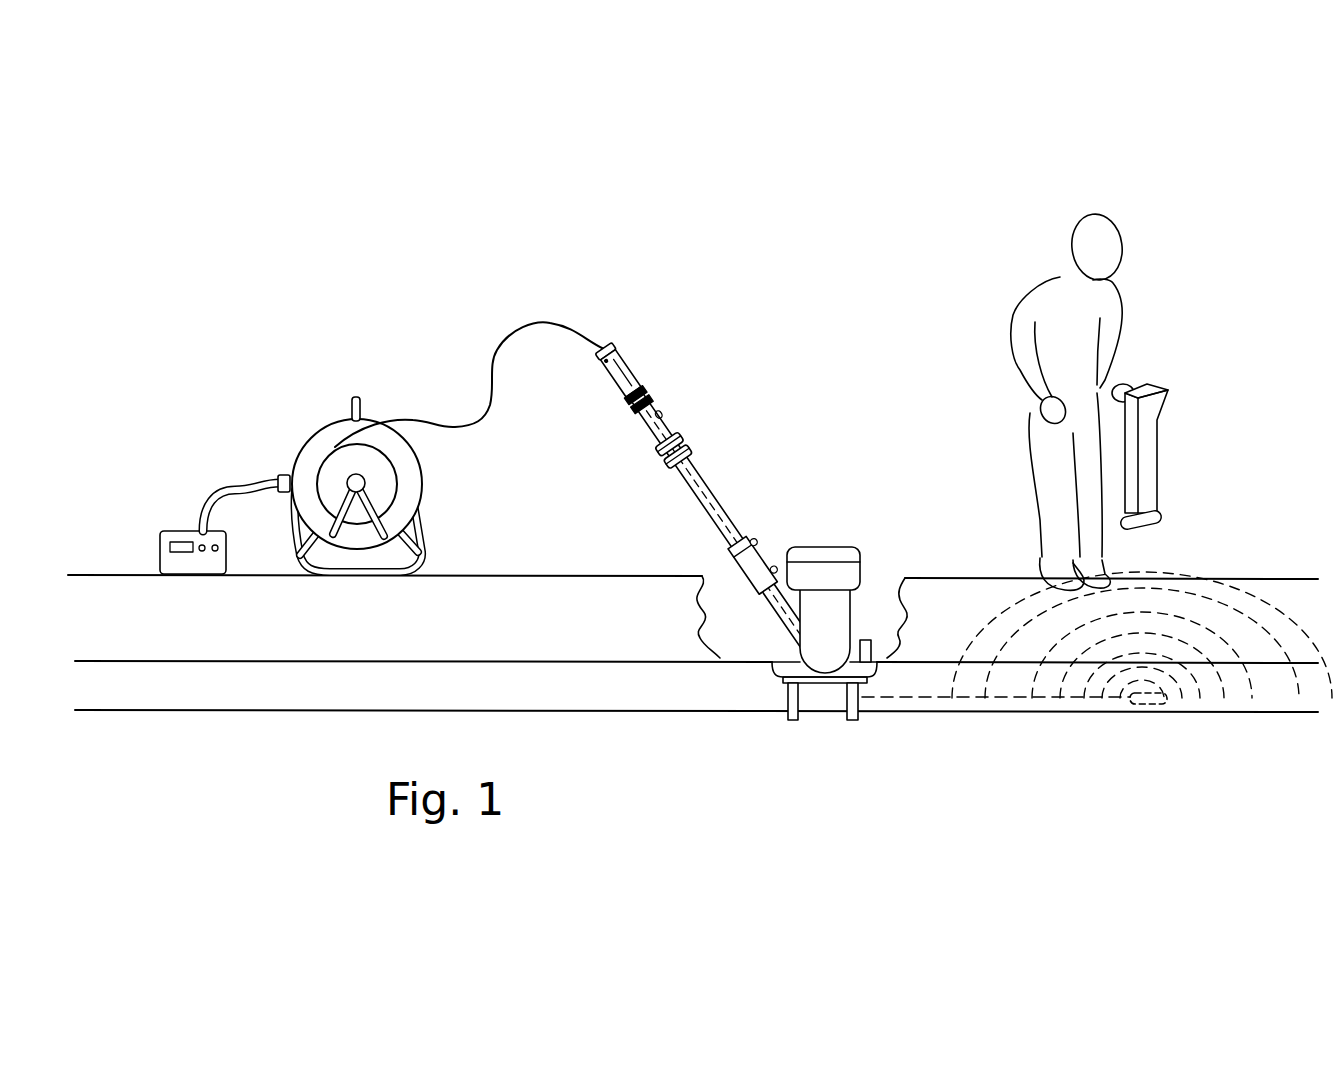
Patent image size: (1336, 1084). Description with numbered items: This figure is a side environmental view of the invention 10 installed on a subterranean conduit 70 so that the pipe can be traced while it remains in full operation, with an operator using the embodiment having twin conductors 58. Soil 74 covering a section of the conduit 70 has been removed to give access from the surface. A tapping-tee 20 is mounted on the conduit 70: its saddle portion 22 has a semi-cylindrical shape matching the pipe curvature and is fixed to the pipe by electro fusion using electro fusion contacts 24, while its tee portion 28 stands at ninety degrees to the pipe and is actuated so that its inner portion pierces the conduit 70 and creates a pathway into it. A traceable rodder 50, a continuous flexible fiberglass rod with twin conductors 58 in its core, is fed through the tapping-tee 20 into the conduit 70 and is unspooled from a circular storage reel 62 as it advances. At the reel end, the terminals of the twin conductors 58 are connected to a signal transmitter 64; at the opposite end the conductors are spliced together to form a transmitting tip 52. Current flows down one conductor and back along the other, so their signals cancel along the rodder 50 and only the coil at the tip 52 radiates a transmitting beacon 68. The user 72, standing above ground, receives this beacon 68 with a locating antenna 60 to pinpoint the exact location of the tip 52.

The invention 10 is at (822, 276).
The tapping-tee 20 is at (867, 608).
The saddle portion 22 is at (857, 667).
The electro fusion contacts 24 is at (867, 636).
The tee portion 28 is at (817, 597).
The traceable rodder 50 is at (493, 350).
The transmitting tip 52 is at (1160, 703).
The twin conductors 58 is at (268, 473).
The receiving antenna 60 is at (1148, 470).
The storage reel 62 is at (328, 433).
The signal transmitter 64 is at (175, 533).
The transmitting beacon 68 is at (1253, 562).
The conduit 70 is at (713, 688).
The user 72 is at (1087, 302).
The soil 74 is at (617, 630).